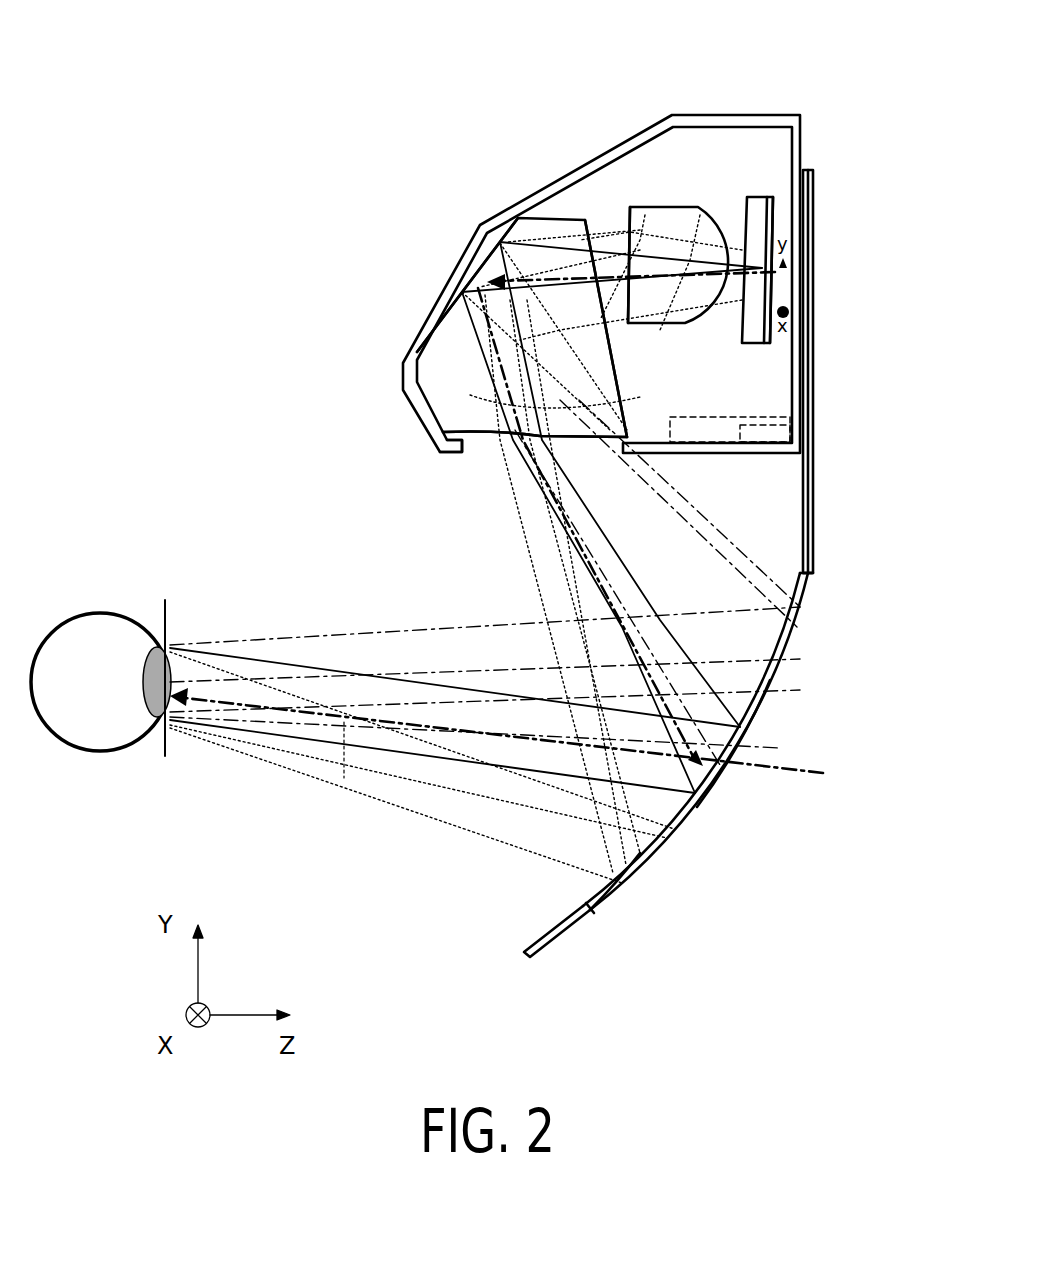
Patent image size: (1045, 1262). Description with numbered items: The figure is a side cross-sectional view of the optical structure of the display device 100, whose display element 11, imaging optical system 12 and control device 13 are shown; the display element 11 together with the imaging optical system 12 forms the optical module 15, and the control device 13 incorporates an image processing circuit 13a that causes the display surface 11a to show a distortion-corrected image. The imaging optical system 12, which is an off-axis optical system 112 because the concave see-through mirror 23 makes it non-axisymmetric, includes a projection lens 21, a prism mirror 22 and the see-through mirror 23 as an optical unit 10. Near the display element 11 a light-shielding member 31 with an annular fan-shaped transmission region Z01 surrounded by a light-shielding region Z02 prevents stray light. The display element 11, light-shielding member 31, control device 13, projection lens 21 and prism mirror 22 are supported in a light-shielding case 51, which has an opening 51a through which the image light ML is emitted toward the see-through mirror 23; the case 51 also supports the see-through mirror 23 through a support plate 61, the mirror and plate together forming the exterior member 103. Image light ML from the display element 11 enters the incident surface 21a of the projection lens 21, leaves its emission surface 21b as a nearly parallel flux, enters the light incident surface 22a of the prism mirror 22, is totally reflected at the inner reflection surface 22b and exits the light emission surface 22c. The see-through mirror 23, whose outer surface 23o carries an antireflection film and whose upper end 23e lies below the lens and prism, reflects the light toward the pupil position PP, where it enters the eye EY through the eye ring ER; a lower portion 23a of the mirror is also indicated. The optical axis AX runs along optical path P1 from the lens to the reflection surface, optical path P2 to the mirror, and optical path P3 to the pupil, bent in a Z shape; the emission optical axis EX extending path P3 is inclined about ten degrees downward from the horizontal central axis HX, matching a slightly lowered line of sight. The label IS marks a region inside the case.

The display device 100 is at (360, 162).
The optical unit 10 is at (462, 200).
The imaging optical system 12 is at (413, 280).
The off-axis optical system 112 is at (400, 312).
The optical module 15 is at (810, 106).
The control device 13 is at (813, 412).
The image processing circuit 13a is at (790, 385).
The case 51 is at (813, 250).
The opening 51a is at (458, 453).
The support plate 61 is at (813, 452).
The exterior member 103 is at (826, 527).
The prism mirror 22 is at (520, 215).
The light incident surface 22a is at (605, 345).
The inner reflection surface 22b is at (490, 248).
The light emission surface 22c is at (478, 432).
The projection lens 21 is at (655, 205).
The incident surface 21a is at (775, 272).
The emission surface 21b is at (630, 205).
The light-shielding member 31 is at (730, 200).
The display element 11 is at (762, 197).
The display surface 11a is at (776, 255).
The see-through mirror 23 is at (752, 720).
The lower end of mirror 23a is at (622, 862).
The upper end 23e is at (815, 585).
The outer surface 23o is at (688, 818).
The eye EY is at (100, 752).
The eye ring ER is at (180, 655).
The pupil position PP is at (165, 640).
The optical path P1 is at (612, 299).
The optical path P2 is at (540, 483).
The optical path P3 is at (345, 778).
The optical axis AX is at (470, 290).
The emission optical axis EX is at (750, 778).
The central axis HX is at (343, 682).
The image light ML is at (497, 200).
The image space IS is at (775, 150).
The transmission region Z01 is at (760, 225).
The light-shielding region Z02 is at (795, 338).